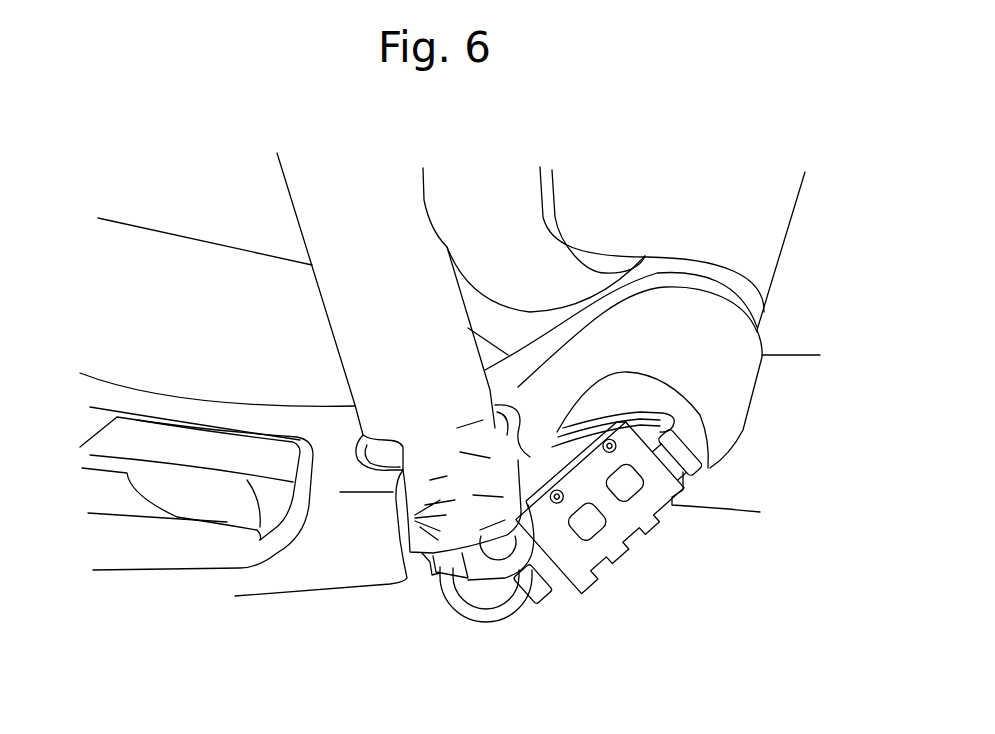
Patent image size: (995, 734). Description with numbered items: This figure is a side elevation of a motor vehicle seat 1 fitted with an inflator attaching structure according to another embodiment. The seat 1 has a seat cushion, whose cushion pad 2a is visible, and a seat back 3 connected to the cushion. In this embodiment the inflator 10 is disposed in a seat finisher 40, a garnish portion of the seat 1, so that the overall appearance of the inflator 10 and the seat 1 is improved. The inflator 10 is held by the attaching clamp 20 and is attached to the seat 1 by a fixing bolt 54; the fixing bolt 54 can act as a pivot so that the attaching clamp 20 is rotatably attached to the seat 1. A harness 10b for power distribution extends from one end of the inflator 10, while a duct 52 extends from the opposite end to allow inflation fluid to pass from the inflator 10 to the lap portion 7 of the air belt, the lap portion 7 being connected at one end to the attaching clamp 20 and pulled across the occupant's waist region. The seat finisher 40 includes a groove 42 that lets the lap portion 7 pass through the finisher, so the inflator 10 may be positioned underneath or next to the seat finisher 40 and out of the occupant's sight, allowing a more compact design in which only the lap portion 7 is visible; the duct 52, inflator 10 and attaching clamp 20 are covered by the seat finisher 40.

The seat 1 is at (882, 197).
The cushion pad 2a is at (112, 241).
The seat back 3 is at (767, 218).
The lap portion 7 is at (323, 232).
The seat finisher 40 is at (740, 377).
The groove 42 is at (392, 494).
The inflator 10 is at (678, 465).
The harness 10b is at (676, 424).
The attaching clamp 20 is at (625, 533).
The duct 52 is at (485, 617).
The fixing bolt 54 is at (498, 550).